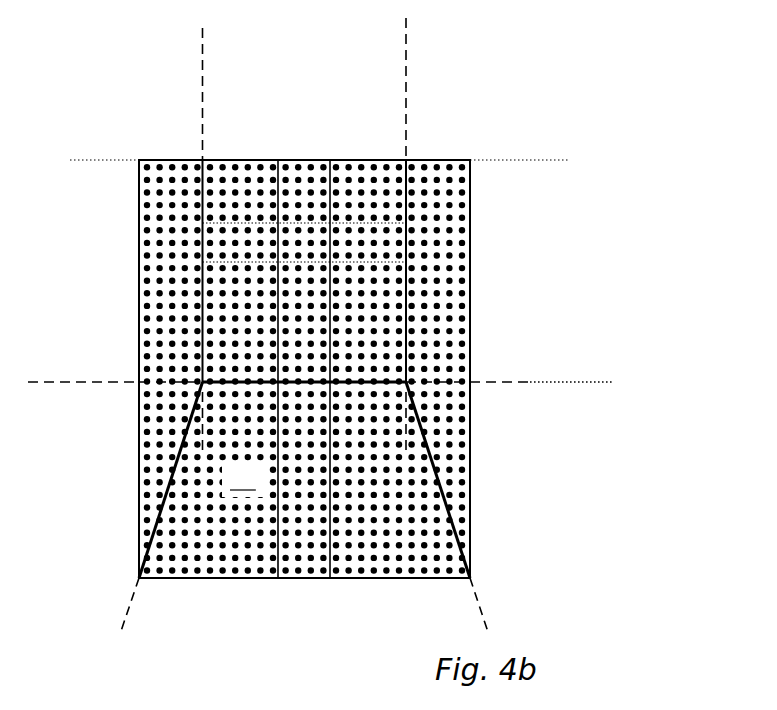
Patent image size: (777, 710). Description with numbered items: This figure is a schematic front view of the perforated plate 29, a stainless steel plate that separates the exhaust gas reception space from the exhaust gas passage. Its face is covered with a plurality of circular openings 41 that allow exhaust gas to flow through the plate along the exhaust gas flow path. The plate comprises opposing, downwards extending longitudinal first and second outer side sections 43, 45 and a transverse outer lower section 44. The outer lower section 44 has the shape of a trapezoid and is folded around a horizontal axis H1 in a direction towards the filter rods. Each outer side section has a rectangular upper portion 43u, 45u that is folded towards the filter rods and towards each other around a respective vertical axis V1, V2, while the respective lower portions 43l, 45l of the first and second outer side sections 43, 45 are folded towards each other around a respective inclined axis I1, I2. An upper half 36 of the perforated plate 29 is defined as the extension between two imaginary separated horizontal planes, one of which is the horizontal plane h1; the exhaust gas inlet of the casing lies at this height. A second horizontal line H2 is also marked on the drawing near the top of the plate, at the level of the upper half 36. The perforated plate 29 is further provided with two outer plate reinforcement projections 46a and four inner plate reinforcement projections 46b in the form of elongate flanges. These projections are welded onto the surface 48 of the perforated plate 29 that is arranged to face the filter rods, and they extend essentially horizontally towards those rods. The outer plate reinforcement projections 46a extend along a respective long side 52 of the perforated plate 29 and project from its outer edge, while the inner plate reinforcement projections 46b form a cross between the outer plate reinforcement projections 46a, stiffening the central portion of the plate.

The perforated plate 29 is at (522, 128).
The upper half 36 is at (168, 160).
The circular openings 41 is at (260, 535).
The first outer side section 43 is at (242, 369).
The upper portion of the first outer side section 43u is at (170, 213).
The lower portion of the first outer side section 43l is at (152, 442).
The outer lower section 44 is at (208, 562).
The second outer side section 45 is at (348, 369).
The upper portion of the second outer side section 45u is at (442, 222).
The lower portion of the second outer side section 45l is at (438, 432).
The outer plate reinforcement projections 46a is at (470, 482).
The inner plate reinforcement projections 46b is at (266, 222).
The surface 48 is at (243, 480).
The long side 52 is at (470, 341).
The vertical axis V1 is at (202, 66).
The vertical axis V2 is at (406, 70).
The horizontal axis H1 is at (88, 382).
The second horizontal reference line H2 is at (535, 160).
The horizontal plane h1 is at (590, 382).
The inclined axis I1 is at (133, 600).
The inclined axis I2 is at (482, 608).